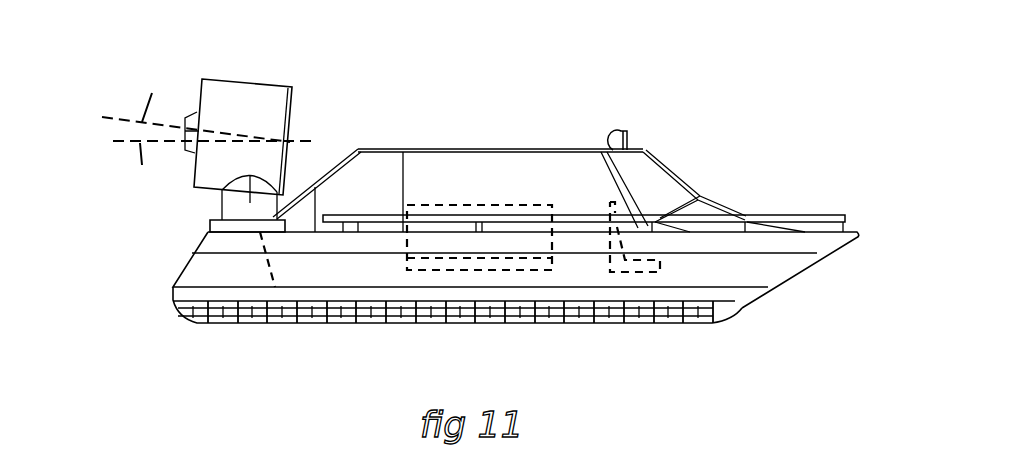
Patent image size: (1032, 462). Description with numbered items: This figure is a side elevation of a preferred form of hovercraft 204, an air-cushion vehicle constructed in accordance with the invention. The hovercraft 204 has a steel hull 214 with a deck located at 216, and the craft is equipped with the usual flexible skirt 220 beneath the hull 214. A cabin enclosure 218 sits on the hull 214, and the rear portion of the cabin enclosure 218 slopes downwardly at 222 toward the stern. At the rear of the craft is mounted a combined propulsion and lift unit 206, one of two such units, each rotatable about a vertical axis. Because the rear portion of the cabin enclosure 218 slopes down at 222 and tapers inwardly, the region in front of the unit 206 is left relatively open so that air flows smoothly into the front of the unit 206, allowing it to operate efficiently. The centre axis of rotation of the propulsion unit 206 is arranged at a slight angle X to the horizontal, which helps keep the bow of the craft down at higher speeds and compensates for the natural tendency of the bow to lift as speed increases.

The hovercraft 204 is at (677, 163).
The combined propulsion and lift unit 206 is at (250, 75).
The steel hull 214 is at (793, 268).
The deck 216 is at (820, 228).
The cabin enclosure 218 is at (638, 145).
The flexible skirt 220 is at (710, 326).
The downwardly sloping rear portion of cabin enclosure 222 is at (337, 152).